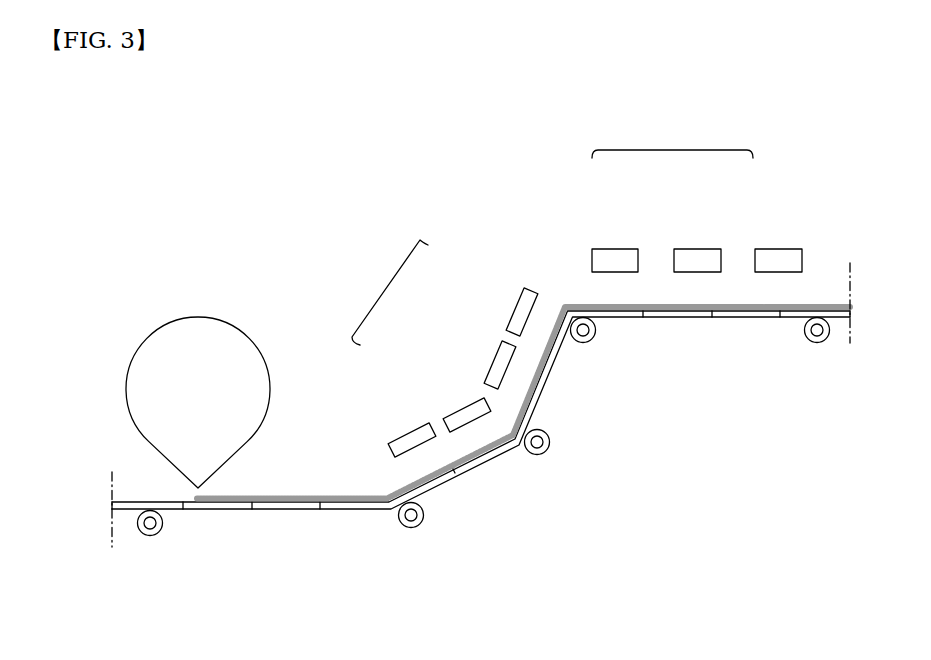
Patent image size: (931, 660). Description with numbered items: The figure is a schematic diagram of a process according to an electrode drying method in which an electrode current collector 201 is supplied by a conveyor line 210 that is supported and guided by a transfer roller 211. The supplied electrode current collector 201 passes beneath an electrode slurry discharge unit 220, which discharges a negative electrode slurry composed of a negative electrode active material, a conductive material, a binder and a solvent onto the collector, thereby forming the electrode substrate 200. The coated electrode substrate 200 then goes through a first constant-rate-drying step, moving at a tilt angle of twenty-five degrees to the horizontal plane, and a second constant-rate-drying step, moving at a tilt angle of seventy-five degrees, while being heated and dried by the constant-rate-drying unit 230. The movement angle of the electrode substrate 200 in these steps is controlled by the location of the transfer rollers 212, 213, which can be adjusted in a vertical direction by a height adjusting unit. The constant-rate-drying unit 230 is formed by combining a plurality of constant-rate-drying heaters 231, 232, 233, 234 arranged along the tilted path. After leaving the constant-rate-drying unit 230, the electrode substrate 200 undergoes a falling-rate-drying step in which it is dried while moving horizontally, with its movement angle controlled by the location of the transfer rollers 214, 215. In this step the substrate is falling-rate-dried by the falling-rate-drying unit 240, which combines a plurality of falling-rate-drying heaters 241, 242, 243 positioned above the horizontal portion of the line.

The electrode substrate 200 is at (330, 485).
The electrode current collector 201 is at (150, 503).
The conveyor line 210 is at (273, 510).
The transfer roller 211 is at (153, 535).
The transfer roller 212 is at (420, 527).
The transfer roller 213 is at (543, 453).
The transfer roller 214 is at (588, 343).
The transfer roller 215 is at (818, 343).
The electrode slurry discharge unit 220 is at (192, 317).
The constant-rate-drying unit 230 is at (386, 288).
The constant-rate-drying heater 231 is at (407, 430).
The constant-rate-drying heater 232 is at (452, 403).
The constant-rate-drying heater 233 is at (488, 350).
The constant-rate-drying heater 234 is at (512, 300).
The falling-rate-drying unit 240 is at (672, 150).
The falling-rate-drying heater 241 is at (620, 249).
The falling-rate-drying heater 242 is at (698, 249).
The falling-rate-drying heater 243 is at (773, 249).